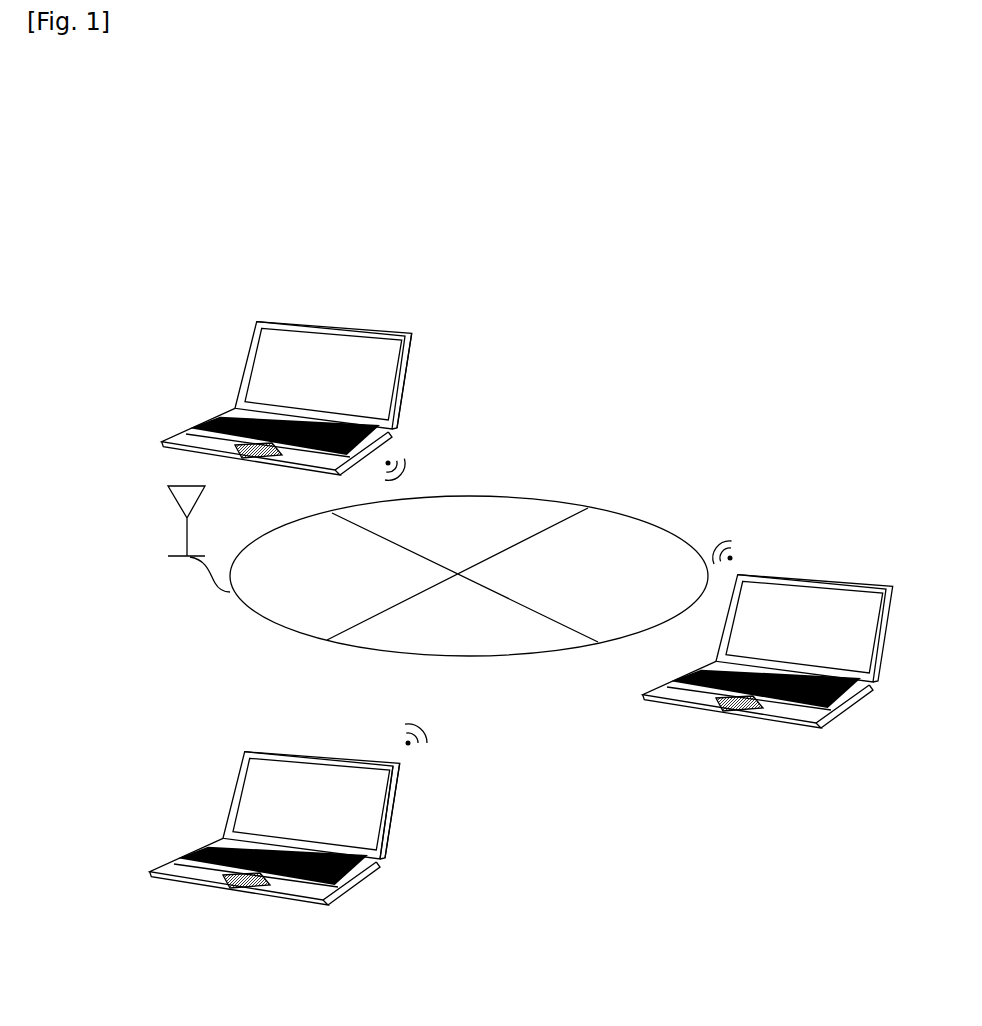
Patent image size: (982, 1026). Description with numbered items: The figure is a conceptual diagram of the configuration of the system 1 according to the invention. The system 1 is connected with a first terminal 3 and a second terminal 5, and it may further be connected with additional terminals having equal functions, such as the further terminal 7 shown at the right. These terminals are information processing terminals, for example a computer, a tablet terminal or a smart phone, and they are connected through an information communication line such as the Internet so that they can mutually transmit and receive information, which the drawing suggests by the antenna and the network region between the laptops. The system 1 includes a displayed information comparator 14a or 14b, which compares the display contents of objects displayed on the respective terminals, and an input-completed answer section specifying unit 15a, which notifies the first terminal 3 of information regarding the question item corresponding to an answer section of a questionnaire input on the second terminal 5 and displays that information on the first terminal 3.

The system 1 is at (440, 183).
The first terminal 3 is at (342, 753).
The second terminal 5 is at (340, 323).
The third communication apparatus 7 is at (802, 577).
The displayed information comparator 14a is at (393, 815).
The displayed information comparator 14b is at (413, 378).
The input-completed answer section specifying unit 15a is at (461, 812).